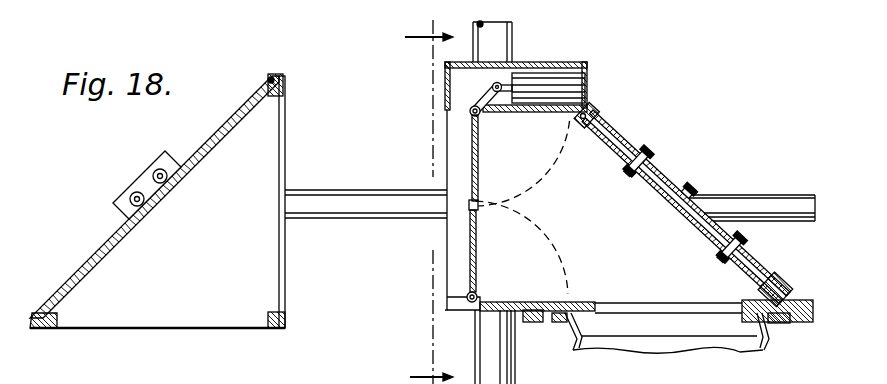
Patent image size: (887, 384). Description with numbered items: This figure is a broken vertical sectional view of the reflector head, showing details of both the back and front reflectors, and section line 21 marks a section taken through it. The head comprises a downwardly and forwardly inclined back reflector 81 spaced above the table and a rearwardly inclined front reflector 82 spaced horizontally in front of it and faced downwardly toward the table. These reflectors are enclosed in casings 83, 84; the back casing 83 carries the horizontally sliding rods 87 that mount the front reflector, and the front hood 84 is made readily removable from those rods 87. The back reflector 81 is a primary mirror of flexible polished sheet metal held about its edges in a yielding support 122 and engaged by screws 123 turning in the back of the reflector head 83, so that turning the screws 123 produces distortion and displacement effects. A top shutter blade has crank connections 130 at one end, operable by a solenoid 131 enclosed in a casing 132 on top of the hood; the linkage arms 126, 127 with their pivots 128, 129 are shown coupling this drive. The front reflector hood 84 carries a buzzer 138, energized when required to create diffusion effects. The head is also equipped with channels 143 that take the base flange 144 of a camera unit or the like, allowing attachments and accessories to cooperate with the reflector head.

The section line 21 is at (426, 200).
The back reflector 81 is at (660, 196).
The front reflector 82 is at (130, 240).
The casing 83 is at (614, 132).
The casing 84 is at (286, 277).
The horizontally sliding rods 87 is at (325, 192).
The yielding support 122 is at (598, 112).
The screws 123 is at (691, 187).
The upper lever arm 126 is at (480, 158).
The lower lever arm 127 is at (478, 263).
The upper pivot 128 is at (471, 113).
The lower pivot 129 is at (467, 297).
The crank connections 130 is at (493, 86).
The solenoid 131 is at (562, 78).
The casing 132 is at (537, 52).
The buzzer 138 is at (138, 176).
The channels 143 is at (790, 324).
The base flange 144 is at (784, 324).